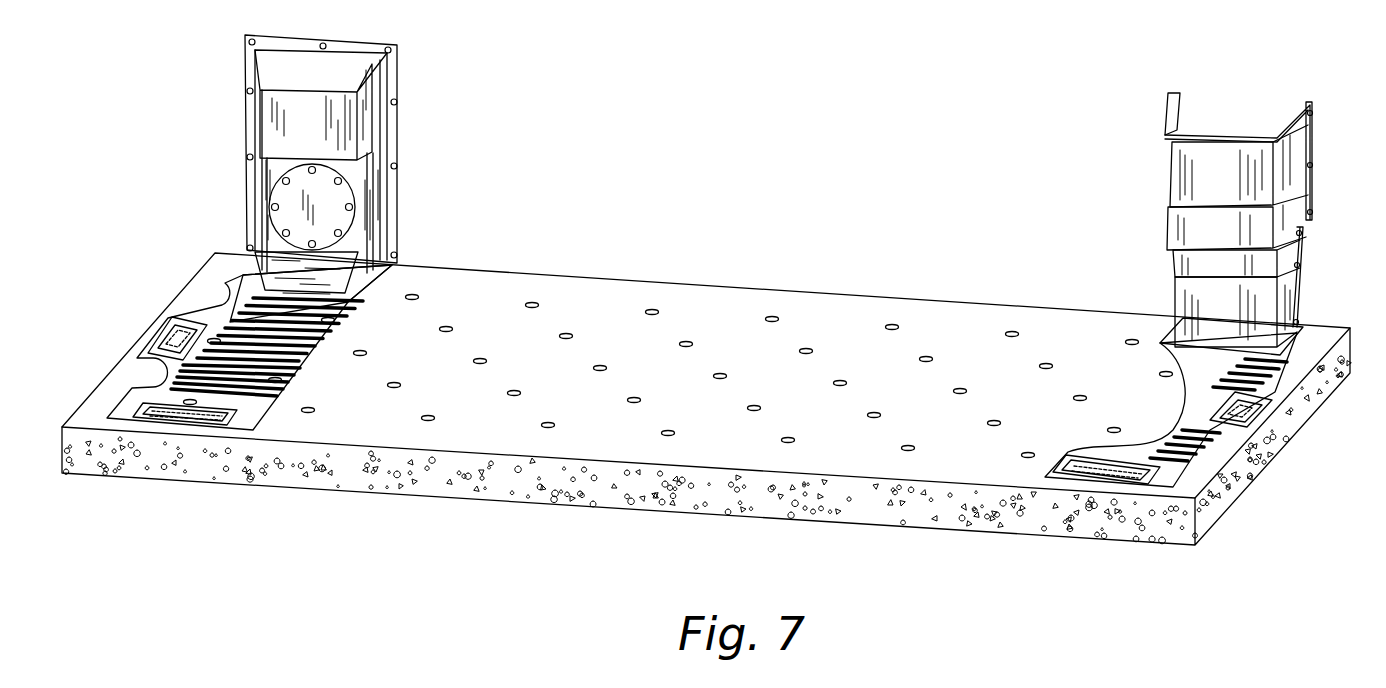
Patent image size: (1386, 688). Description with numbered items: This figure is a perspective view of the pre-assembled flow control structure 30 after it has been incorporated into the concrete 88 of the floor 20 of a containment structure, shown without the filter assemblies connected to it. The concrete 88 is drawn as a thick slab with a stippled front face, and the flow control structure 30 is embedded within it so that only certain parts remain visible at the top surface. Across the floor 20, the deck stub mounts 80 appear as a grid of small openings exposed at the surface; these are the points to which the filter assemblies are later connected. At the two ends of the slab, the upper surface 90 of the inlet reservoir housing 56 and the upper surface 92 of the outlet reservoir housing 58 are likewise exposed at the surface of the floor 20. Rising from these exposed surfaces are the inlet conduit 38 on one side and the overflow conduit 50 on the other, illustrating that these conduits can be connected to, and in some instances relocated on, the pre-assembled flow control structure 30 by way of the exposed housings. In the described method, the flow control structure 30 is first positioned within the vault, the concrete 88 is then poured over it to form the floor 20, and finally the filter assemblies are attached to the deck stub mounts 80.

The floor 20 is at (935, 328).
The pre-assembled flow control structure 30 is at (773, 111).
The inlet conduit 38 is at (1210, 223).
The overflow conduit 50 is at (382, 134).
The inlet reservoir housing 56 is at (1163, 475).
The outlet reservoir housing 58 is at (130, 408).
The deck stub mounts 80 is at (530, 303).
The concrete 88 is at (695, 315).
The upper surface of the inlet reservoir housing 90 is at (1197, 403).
The upper surface of the outlet reservoir housing 92 is at (230, 350).